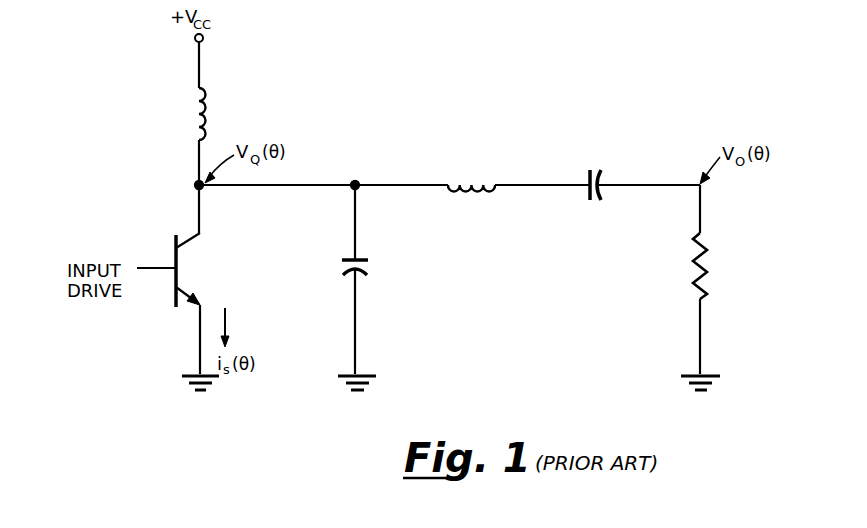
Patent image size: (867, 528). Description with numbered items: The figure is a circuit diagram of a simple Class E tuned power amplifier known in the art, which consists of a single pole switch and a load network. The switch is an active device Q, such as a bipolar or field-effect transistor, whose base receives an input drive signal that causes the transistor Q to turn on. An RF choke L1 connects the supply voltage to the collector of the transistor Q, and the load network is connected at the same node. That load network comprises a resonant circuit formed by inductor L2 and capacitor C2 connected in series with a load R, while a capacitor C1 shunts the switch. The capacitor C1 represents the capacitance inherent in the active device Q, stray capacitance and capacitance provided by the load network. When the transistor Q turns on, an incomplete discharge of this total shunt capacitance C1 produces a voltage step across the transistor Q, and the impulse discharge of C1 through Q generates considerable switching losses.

The RF choke L1 is at (210, 107).
The inductor of resonant circuit L2 is at (455, 182).
The shunt capacitor C1 is at (372, 266).
The capacitor of resonant circuit C2 is at (593, 163).
The active device Q is at (177, 279).
The load R is at (712, 267).